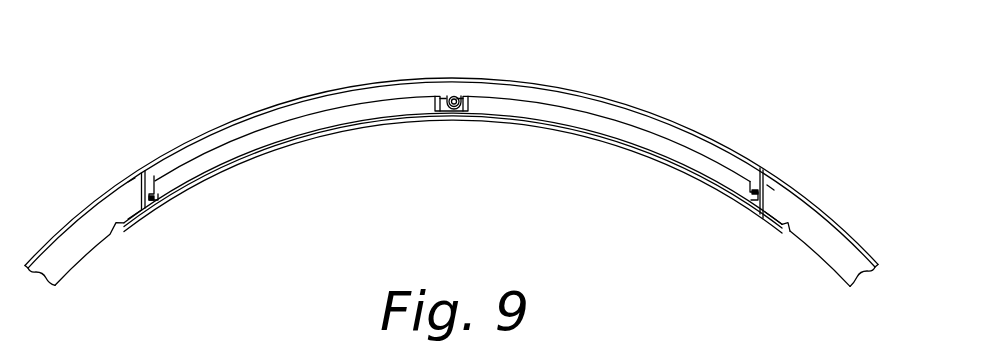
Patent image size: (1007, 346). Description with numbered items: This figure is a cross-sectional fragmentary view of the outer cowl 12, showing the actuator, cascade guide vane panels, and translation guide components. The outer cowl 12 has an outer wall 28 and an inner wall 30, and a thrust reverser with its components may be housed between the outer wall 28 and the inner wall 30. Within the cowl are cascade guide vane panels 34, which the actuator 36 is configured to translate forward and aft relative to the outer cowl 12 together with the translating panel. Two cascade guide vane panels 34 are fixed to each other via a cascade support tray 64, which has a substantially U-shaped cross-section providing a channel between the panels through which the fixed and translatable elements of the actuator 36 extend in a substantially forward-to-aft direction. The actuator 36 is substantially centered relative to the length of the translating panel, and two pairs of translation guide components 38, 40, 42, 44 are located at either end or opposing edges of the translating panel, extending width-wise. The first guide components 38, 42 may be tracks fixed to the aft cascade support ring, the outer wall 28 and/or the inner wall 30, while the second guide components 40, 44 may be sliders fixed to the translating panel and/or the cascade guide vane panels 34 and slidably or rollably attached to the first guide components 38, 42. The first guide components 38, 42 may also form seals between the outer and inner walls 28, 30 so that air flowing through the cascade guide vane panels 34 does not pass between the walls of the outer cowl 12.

The outer cowl 12 is at (129, 61).
The outer wall 28 is at (812, 200).
The inner wall 30 is at (170, 202).
The cascade guide vane panel 34 is at (326, 121).
The actuator 36 is at (455, 95).
The first guide component 38 is at (764, 218).
The second guide component 40 is at (759, 168).
The first guide component 42 is at (137, 216).
The second guide component 44 is at (144, 172).
The cascade support tray 64 is at (452, 112).